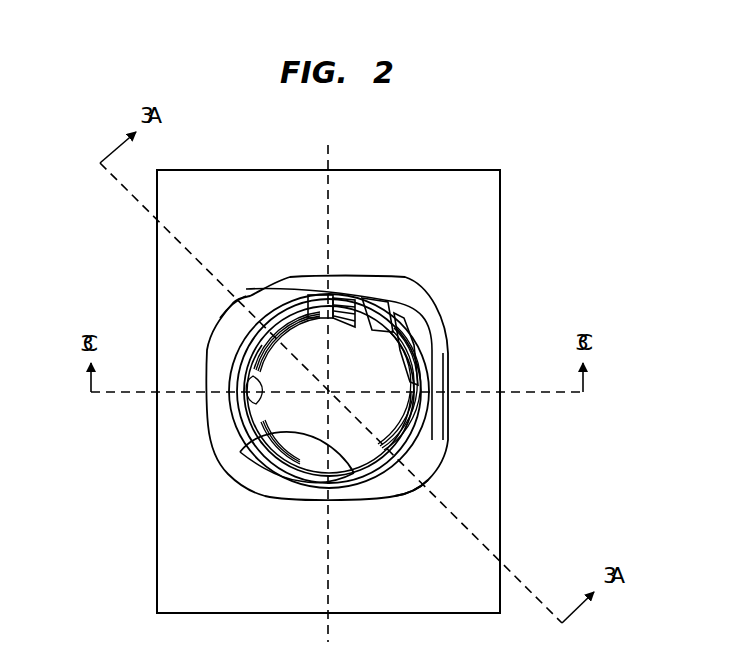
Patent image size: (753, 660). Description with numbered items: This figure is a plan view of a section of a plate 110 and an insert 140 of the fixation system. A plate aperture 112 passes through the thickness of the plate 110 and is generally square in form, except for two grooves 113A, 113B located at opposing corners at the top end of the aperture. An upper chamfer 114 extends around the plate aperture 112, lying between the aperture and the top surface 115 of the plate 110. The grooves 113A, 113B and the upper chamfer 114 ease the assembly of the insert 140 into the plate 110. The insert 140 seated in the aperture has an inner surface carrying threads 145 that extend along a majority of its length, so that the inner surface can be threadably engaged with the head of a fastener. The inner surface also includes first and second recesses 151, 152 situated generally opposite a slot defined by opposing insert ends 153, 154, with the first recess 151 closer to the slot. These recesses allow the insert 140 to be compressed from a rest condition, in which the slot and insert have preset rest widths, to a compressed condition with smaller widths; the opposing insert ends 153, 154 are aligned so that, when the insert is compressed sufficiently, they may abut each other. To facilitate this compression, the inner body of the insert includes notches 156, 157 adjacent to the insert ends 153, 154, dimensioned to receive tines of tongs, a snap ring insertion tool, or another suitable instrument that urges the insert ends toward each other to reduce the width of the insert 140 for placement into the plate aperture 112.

The plate 110 is at (546, 238).
The plate aperture 112 is at (382, 318).
The groove 113A is at (240, 317).
The groove 113B is at (422, 452).
The upper chamfer 114 is at (219, 384).
The top surface 115 is at (267, 200).
The insert 140 is at (322, 487).
The threads 145 is at (400, 405).
The first recess 151 is at (262, 403).
The second recess 152 is at (300, 437).
The insert end 153 is at (352, 298).
The insert end 154 is at (380, 305).
The notch 156 is at (321, 310).
The notch 157 is at (412, 362).